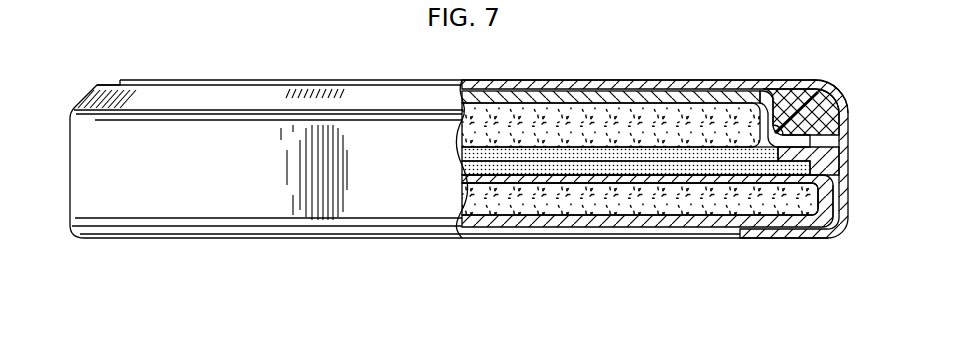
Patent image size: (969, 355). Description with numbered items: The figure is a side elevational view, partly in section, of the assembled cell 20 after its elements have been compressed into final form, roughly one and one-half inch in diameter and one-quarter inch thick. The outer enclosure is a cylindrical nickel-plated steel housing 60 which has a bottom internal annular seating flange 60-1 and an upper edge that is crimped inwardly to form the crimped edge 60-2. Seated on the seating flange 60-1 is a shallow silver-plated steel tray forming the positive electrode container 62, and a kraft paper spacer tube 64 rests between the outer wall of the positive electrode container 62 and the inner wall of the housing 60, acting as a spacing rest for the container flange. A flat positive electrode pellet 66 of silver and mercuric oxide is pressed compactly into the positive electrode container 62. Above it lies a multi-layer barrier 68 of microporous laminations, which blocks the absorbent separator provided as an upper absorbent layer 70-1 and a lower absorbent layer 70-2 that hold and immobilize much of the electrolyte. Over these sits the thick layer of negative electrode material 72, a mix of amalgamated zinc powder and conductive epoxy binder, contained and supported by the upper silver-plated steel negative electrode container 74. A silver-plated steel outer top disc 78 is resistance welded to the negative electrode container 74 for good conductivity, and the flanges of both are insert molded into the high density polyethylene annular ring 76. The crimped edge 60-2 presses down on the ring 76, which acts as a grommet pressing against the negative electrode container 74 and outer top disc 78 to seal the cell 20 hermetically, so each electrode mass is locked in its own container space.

The cell 20 is at (301, 69).
The housing 60 is at (861, 148).
The seating flange 60-1 is at (760, 239).
The crimped edge 60-2 is at (836, 93).
The positive electrode container 62 is at (822, 190).
The spacer tube 64 is at (833, 202).
The positive electrode pellet 66 is at (607, 200).
The multi-layer barrier 68 is at (456, 186).
The upper absorbent layer 70-1 is at (465, 151).
The lower absorbent layer 70-2 is at (465, 166).
The negative electrode material 72 is at (520, 118).
The negative electrode container 74 is at (600, 97).
The polyethylene annular ring 76 is at (807, 92).
The outer top disc 78 is at (681, 80).